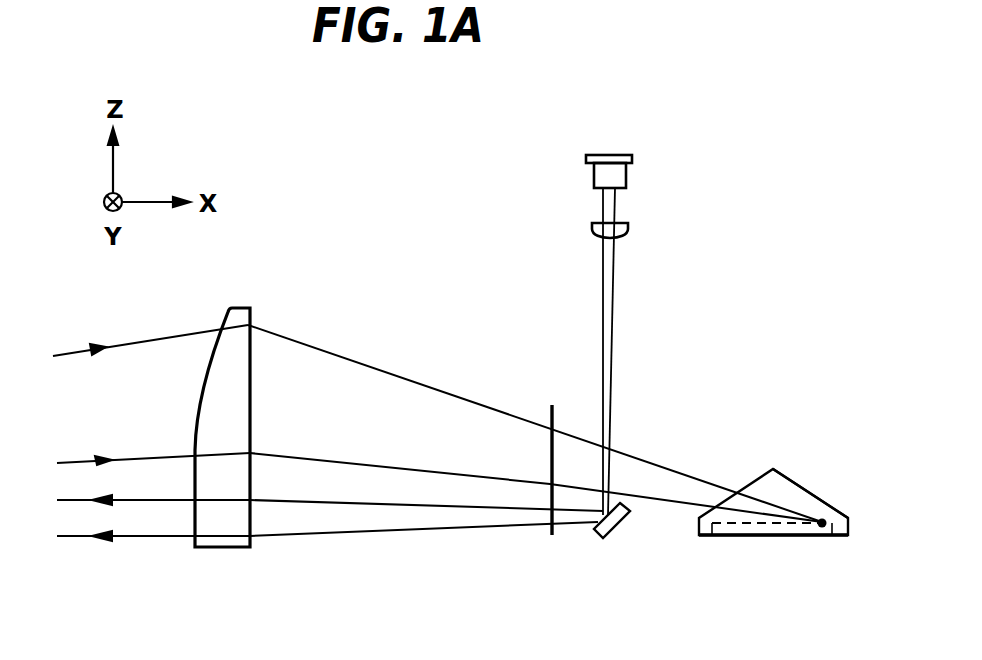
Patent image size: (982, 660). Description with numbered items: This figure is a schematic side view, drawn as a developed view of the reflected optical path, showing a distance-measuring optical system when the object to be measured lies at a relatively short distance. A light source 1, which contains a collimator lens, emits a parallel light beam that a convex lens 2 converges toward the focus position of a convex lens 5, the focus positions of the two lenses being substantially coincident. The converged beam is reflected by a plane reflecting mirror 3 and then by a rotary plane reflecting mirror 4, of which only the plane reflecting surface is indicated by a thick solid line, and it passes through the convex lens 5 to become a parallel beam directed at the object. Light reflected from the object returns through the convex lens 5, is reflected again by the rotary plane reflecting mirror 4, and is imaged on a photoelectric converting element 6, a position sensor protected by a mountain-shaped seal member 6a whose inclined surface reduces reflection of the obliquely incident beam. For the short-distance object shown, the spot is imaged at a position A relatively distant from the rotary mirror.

The light source 1 is at (633, 174).
The convex lens 2 is at (630, 233).
The plane reflecting mirror 3 is at (617, 531).
The rotary plane reflecting mirror 4 is at (550, 537).
The convex lens 5 is at (217, 549).
The photoelectric converting element 6 is at (760, 537).
The seal member 6a is at (814, 498).
The position A is at (822, 530).